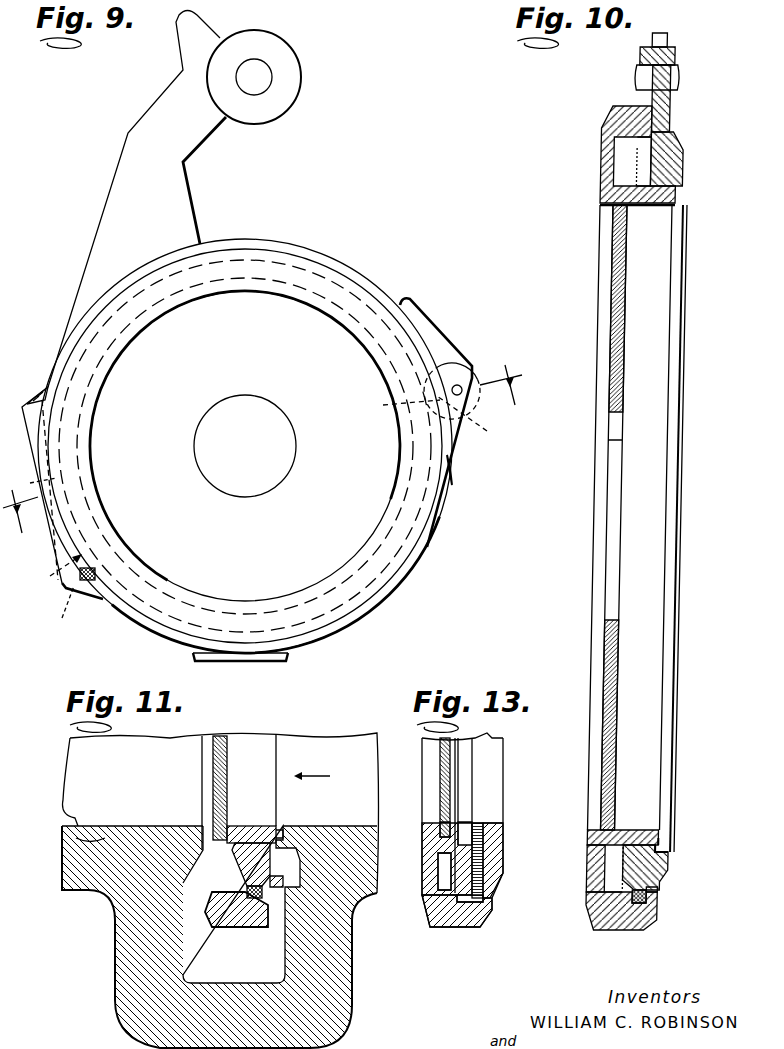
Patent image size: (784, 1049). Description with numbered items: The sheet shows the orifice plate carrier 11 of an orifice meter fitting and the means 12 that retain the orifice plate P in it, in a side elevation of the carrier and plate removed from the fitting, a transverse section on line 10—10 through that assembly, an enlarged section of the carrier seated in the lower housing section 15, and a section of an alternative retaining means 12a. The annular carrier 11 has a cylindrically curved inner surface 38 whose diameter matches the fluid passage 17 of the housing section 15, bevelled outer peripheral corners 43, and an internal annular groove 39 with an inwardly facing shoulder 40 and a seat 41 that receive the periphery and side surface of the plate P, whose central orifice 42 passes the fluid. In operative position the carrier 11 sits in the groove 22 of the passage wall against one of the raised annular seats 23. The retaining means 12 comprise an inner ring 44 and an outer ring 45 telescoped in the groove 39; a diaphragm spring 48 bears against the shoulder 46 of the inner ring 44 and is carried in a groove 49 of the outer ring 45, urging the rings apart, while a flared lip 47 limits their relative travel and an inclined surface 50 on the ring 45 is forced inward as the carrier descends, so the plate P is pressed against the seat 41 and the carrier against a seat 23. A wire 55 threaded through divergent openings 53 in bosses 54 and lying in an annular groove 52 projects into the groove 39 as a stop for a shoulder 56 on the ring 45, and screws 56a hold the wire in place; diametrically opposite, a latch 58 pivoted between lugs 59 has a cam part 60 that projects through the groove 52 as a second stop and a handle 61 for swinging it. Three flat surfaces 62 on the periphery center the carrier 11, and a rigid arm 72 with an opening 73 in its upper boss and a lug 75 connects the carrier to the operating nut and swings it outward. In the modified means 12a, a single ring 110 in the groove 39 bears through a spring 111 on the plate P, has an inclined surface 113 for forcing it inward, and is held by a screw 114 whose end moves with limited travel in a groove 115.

In FIG. 9, the body or housing 10 is at (281, 463).
In FIG. 9, the orifice plate carrier 11 is at (328, 248).
In FIG. 10, the orifice plate carrier 11 is at (596, 153).
In FIG. 11, the orifice plate carrier 11 is at (198, 757).
In FIG. 9, the plate retaining means 12 is at (267, 492).
In FIG. 10, the plate retaining means 12 is at (676, 892).
In FIG. 11, the plate retaining means 12 is at (278, 895).
In FIG. 13, the modified plate retaining means 12a is at (500, 806).
In FIG. 11, the lower housing section 15 is at (88, 891).
In FIG. 11, the fluid passage 17 is at (62, 815).
In FIG. 11, the groove 22 is at (241, 904).
In FIG. 11, the annular seats 23 is at (272, 835).
In FIG. 9, the inner surface 38 is at (415, 540).
In FIG. 10, the inner surface 38 is at (600, 831).
In FIG. 11, the inner surface 38 is at (207, 822).
In FIG. 13, the inner surface 38 is at (435, 830).
In FIG. 10, the annular groove 39 is at (609, 912).
In FIG. 11, the annular groove 39 is at (215, 896).
In FIG. 13, the annular groove 39 is at (428, 895).
In FIG. 10, the shoulder 40 is at (626, 852).
In FIG. 10, the seat 41 is at (608, 838).
In FIG. 9, the orifice 42 is at (292, 463).
In FIG. 10, the orifice 42 is at (613, 622).
In FIG. 10, the outer peripheral corners 43 is at (610, 929).
In FIG. 11, the outer peripheral corners 43 is at (210, 905).
In FIG. 13, the outer peripheral corners 43 is at (427, 916).
In FIG. 10, the inner ring 44 is at (652, 836).
In FIG. 11, the inner ring 44 is at (228, 845).
In FIG. 10, the outer ring 45 is at (685, 860).
In FIG. 11, the outer ring 45 is at (262, 850).
In FIG. 10, the shoulder 46 is at (640, 829).
In FIG. 10, the lip 47 is at (672, 846).
In FIG. 10, the diaphragm spring 48 is at (618, 170).
In FIG. 10, the groove 49 is at (612, 145).
In FIG. 11, the groove 49 is at (225, 900).
In FIG. 10, the inclined surface 50 is at (674, 884).
In FIG. 11, the inclined surface 50 is at (275, 878).
In FIG. 10, the groove 52 is at (658, 906).
In FIG. 11, the groove 52 is at (254, 900).
In FIG. 9, the openings 53 is at (65, 584).
In FIG. 9, the bosses 54 is at (95, 601).
In FIG. 9, the wire 55 is at (30, 484).
In FIG. 10, the wire 55 is at (672, 905).
In FIG. 11, the wire 55 is at (272, 888).
In FIG. 10, the shoulder 56 is at (653, 931).
In FIG. 9, the screws 56a is at (58, 612).
In FIG. 9, the latch 58 is at (450, 362).
In FIG. 10, the latch 58 is at (676, 57).
In FIG. 9, the lugs 59 is at (460, 394).
In FIG. 10, the lugs 59 is at (636, 55).
In FIG. 9, the cam part 60 is at (399, 406).
In FIG. 10, the cam part 60 is at (682, 136).
In FIG. 9, the handle 61 is at (420, 322).
In FIG. 9, the flat surfaces 62 is at (451, 470).
In FIG. 10, the flat surfaces 62 is at (628, 931).
In FIG. 9, the arm 72 is at (178, 202).
In FIG. 9, the opening 73 is at (263, 90).
In FIG. 9, the lug 75 is at (185, 35).
In FIG. 9, the orifice plate P is at (405, 503).
In FIG. 10, the orifice plate P is at (617, 268).
In FIG. 11, the orifice plate P is at (212, 772).
In FIG. 13, the orifice plate P is at (440, 793).
In FIG. 13, the ring 110 is at (497, 840).
In FIG. 13, the spring 111 is at (438, 862).
In FIG. 13, the inclined surface 113 is at (484, 872).
In FIG. 13, the screw 114 is at (470, 830).
In FIG. 13, the groove 115 is at (465, 904).